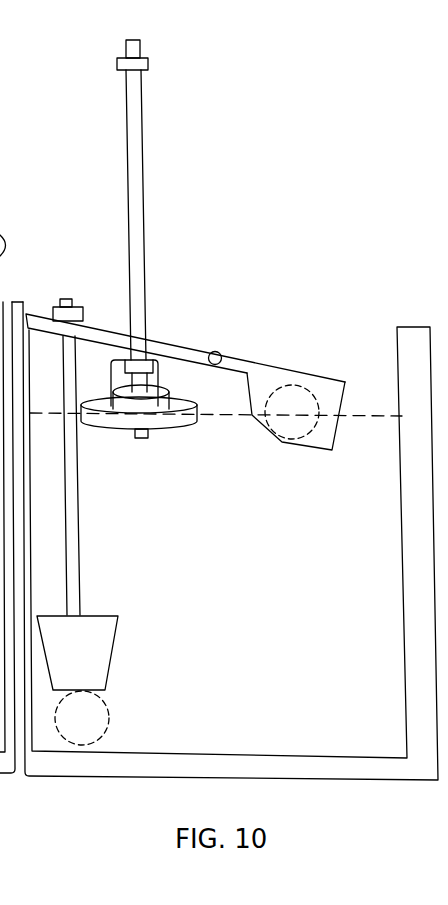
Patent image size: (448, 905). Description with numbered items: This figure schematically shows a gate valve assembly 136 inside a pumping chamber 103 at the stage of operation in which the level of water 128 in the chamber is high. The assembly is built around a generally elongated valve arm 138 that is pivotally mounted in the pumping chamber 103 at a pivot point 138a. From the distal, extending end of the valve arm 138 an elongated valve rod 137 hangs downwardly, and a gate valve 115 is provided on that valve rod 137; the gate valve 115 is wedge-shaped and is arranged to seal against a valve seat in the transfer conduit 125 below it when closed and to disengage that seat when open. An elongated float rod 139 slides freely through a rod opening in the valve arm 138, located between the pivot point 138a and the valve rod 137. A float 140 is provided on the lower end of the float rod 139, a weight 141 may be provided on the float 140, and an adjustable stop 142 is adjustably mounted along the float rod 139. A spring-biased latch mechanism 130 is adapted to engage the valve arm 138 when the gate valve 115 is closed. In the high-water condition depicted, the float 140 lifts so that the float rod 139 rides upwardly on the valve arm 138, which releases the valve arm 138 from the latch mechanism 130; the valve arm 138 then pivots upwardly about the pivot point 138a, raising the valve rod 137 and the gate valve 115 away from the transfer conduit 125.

The pumping chamber 103 is at (397, 334).
The gate valve 115 is at (87, 648).
The transfer conduit 125 is at (92, 720).
The water 128 is at (352, 413).
The latch mechanism 130 is at (118, 380).
The gate valve assembly 136 is at (229, 313).
The valve rod 137 is at (73, 510).
The valve arm 138 is at (182, 351).
The pivot point 138a is at (222, 353).
The float rod 139 is at (136, 190).
The float 140 is at (170, 423).
The weight 141 is at (156, 392).
The adjustable stop 142 is at (135, 363).